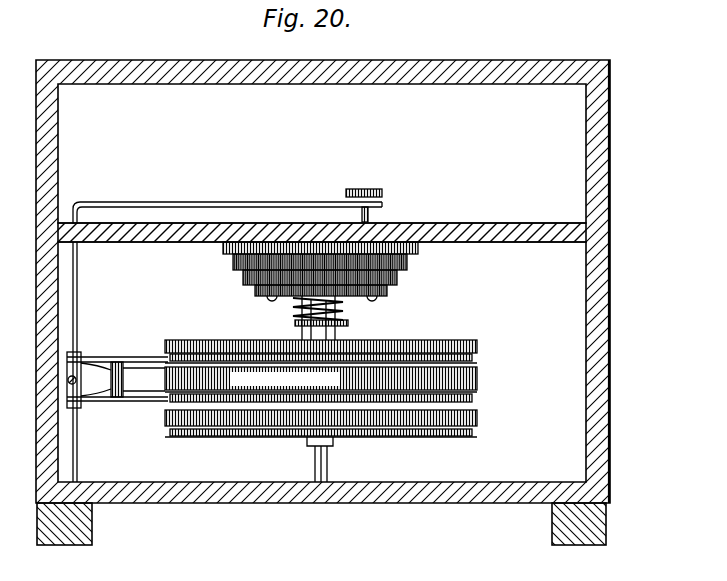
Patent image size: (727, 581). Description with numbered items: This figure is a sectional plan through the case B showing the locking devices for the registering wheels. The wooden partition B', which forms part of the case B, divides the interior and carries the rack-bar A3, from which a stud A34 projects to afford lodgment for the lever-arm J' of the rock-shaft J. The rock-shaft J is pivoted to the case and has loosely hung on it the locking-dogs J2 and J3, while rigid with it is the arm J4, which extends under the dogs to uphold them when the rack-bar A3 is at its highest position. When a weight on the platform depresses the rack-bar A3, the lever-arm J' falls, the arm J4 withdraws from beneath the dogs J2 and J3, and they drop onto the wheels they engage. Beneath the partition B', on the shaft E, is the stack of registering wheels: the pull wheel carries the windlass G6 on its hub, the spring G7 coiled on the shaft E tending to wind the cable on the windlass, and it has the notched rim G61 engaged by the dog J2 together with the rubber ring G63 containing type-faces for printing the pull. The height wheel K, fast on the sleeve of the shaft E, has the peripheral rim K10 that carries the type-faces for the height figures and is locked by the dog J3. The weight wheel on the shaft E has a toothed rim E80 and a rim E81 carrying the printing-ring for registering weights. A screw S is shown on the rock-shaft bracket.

The case B is at (323, 287).
The wooden partition B' is at (322, 211).
The lever-arm J' is at (227, 196).
The rack-bar A3 is at (380, 192).
The stud A34 is at (372, 214).
The rock-shaft J is at (88, 362).
The screw S is at (74, 380).
The locking-dog J2 is at (138, 358).
The arm J4 is at (124, 380).
The locking-dog J3 is at (127, 418).
The spring G7 is at (306, 319).
The windlass G6 is at (349, 324).
The rubber ring G63 is at (478, 352).
The notched rim G61 is at (478, 362).
The peripheral rim K10 is at (285, 381).
The wheel K is at (525, 411).
The rim E81 is at (430, 437).
The toothed rim E80 is at (406, 437).
The shaft E is at (329, 449).